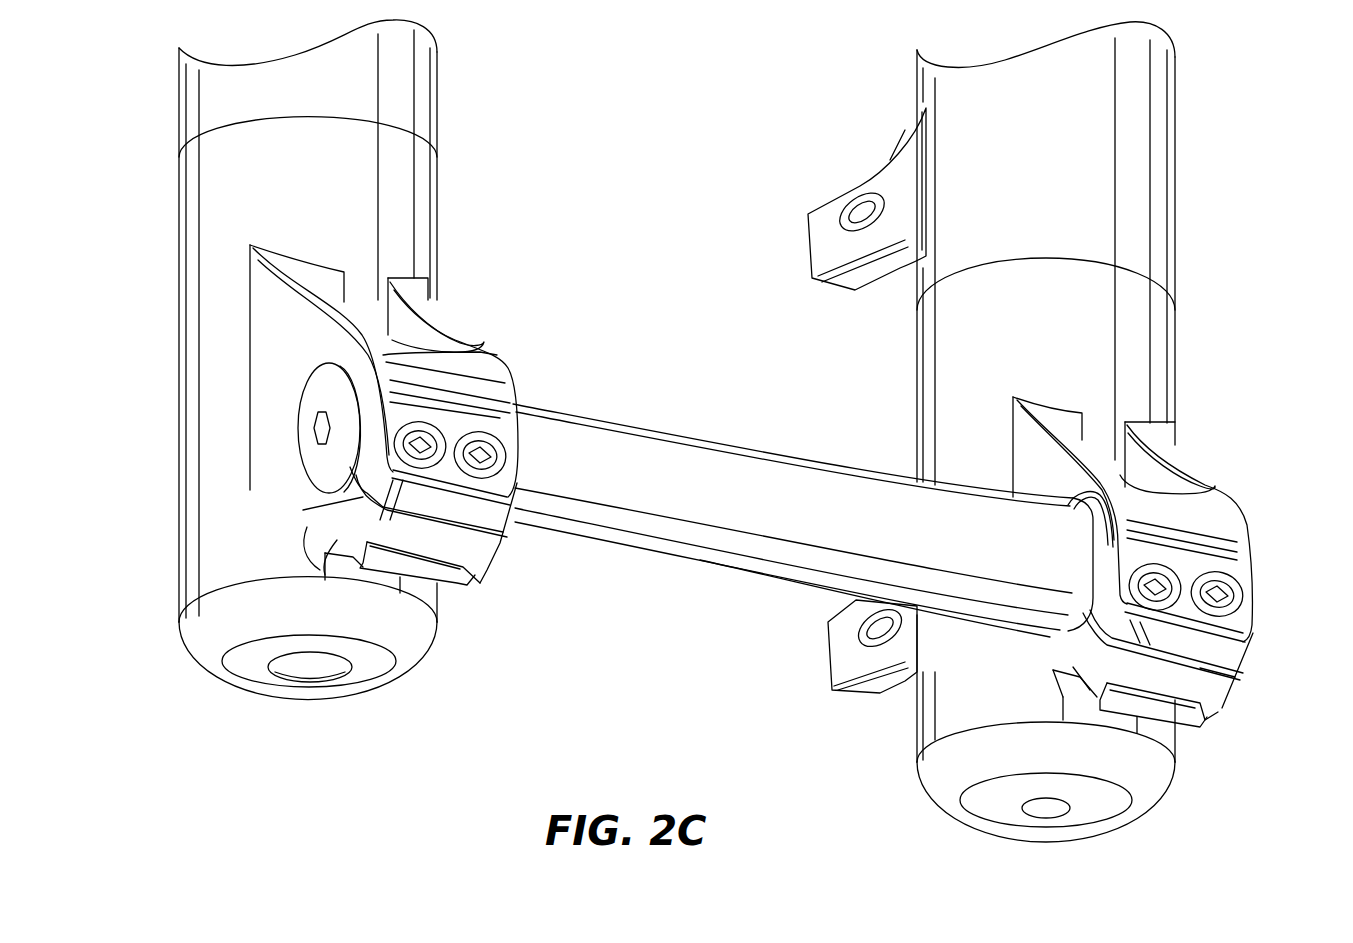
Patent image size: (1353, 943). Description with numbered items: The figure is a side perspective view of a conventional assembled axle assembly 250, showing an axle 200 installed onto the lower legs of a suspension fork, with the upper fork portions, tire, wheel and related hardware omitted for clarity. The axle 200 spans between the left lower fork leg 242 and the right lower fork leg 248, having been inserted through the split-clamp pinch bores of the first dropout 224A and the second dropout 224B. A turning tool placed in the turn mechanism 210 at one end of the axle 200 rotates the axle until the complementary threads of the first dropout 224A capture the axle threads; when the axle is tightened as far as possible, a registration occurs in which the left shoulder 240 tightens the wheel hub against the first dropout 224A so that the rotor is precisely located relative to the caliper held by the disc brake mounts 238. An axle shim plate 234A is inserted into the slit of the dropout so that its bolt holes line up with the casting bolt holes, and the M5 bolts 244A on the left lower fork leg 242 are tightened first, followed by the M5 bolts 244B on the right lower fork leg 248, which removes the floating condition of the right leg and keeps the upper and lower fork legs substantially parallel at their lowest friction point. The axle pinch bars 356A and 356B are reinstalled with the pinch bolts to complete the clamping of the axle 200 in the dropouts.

The axle 200 is at (695, 590).
The turn mechanism 210 is at (312, 430).
The first dropout 224A is at (1248, 518).
The second dropout 224B is at (330, 538).
The axle shim plate 234A is at (1220, 677).
The disc brake mounts 238 is at (808, 266).
The left shoulder 240 is at (1062, 492).
The left lower fork leg 242 is at (1176, 131).
The M5 bolts 244A is at (1238, 598).
The M5 bolts 244B is at (508, 404).
The right lower fork leg 248 is at (445, 82).
The assembled axle assembly 250 is at (428, 764).
The axle pinch bar 356A is at (1183, 730).
The axle pinch bar 356B is at (445, 592).